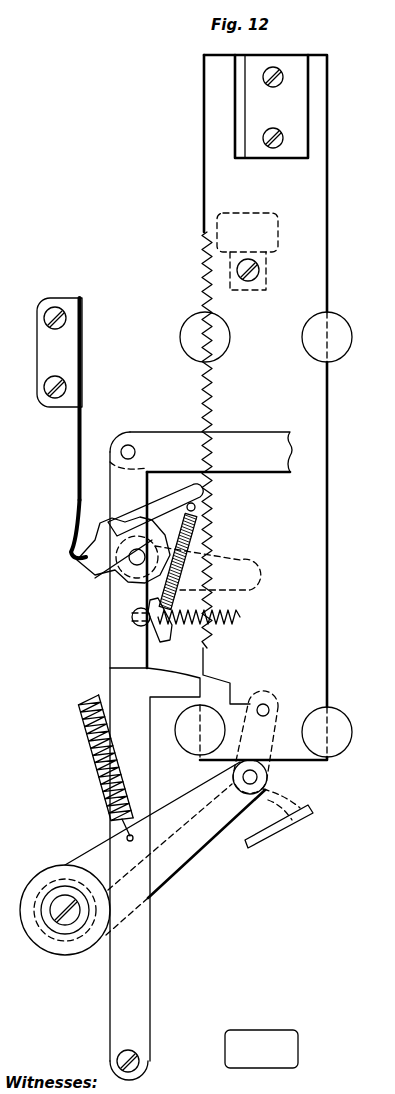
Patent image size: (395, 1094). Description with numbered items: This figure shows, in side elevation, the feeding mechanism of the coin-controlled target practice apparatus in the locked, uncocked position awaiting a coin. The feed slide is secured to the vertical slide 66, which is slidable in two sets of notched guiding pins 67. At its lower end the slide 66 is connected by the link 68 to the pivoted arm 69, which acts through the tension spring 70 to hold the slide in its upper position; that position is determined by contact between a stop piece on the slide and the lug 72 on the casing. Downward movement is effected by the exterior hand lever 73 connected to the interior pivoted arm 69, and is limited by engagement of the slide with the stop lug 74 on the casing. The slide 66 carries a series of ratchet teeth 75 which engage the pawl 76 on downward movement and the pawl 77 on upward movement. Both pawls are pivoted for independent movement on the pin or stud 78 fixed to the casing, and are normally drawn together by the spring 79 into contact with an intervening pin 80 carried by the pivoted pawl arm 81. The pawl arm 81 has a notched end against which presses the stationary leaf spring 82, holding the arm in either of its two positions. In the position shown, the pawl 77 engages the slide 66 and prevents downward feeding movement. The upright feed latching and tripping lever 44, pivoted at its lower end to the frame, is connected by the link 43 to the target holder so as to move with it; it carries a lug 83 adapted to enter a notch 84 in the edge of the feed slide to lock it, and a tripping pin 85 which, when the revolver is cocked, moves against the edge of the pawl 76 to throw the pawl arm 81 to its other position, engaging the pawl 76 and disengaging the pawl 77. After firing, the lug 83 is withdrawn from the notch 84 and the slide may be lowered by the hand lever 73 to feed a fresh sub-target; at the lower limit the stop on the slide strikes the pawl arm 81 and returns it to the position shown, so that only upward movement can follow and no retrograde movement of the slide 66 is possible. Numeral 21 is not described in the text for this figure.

The screw 21 is at (262, 280).
The link 43 is at (248, 444).
The feed latching and tripping lever 44 is at (109, 646).
The vertical slide 66 is at (263, 407).
The notched guiding pins 67 is at (192, 322).
The link 68 is at (270, 768).
The pivoted arm 69 is at (183, 848).
The tension spring 70 is at (78, 740).
The lug 72 is at (275, 215).
The hand lever 73 is at (300, 838).
The stop lug 74 is at (300, 1046).
The ratchet teeth 75 is at (200, 389).
The pawl 76 is at (138, 596).
The pawl 77 is at (160, 512).
The pin or stud 78 is at (112, 572).
The spring 79 is at (200, 540).
The intervening pin 80 is at (206, 562).
The pawl arm 81 is at (82, 560).
The leaf spring 82 is at (74, 494).
The lug 83 is at (168, 692).
The notch 84 is at (228, 692).
The tripping pin 85 is at (166, 634).